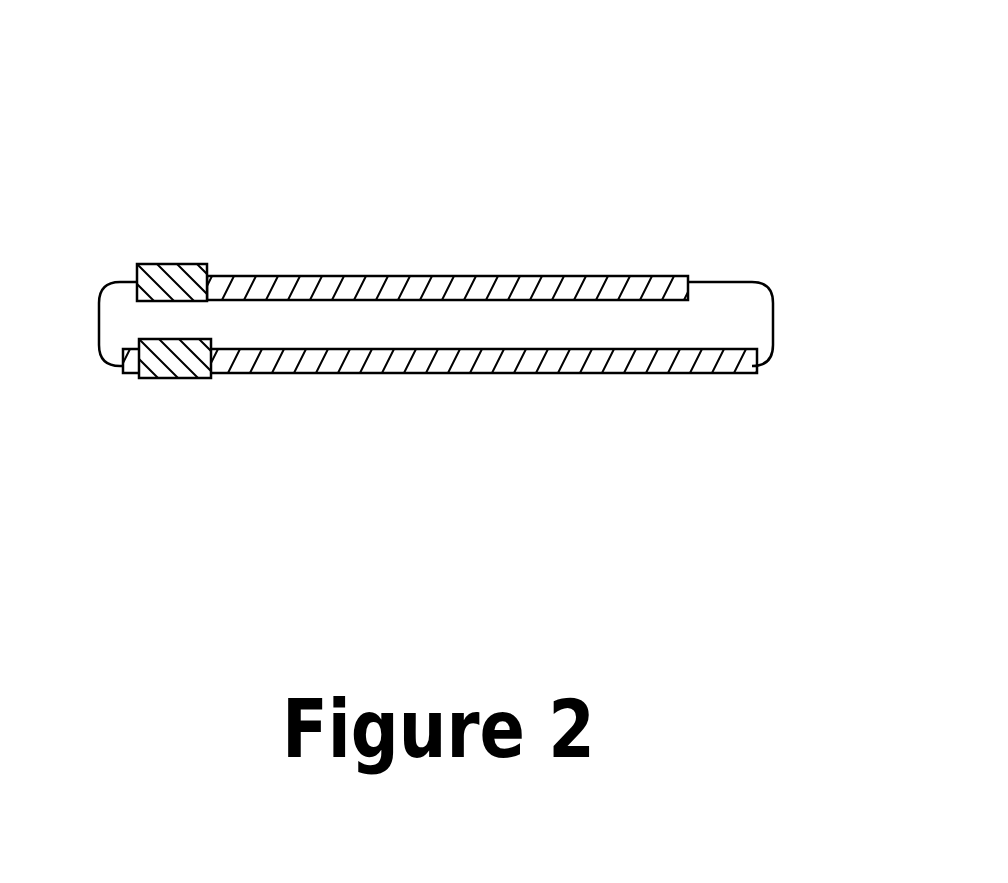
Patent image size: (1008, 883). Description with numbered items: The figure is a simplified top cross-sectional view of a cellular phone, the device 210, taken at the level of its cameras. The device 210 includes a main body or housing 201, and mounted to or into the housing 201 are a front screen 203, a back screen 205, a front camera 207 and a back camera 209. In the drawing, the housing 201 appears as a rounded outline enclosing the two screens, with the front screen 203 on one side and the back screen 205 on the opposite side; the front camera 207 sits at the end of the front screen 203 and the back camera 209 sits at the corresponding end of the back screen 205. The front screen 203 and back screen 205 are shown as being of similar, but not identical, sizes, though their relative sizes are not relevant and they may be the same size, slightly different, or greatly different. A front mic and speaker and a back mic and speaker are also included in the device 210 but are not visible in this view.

The device 210 is at (393, 86).
The main body or housing 201 is at (752, 283).
The back screen 205 is at (553, 277).
The front screen 203 is at (462, 373).
The back camera 209 is at (176, 263).
The front camera 207 is at (173, 378).